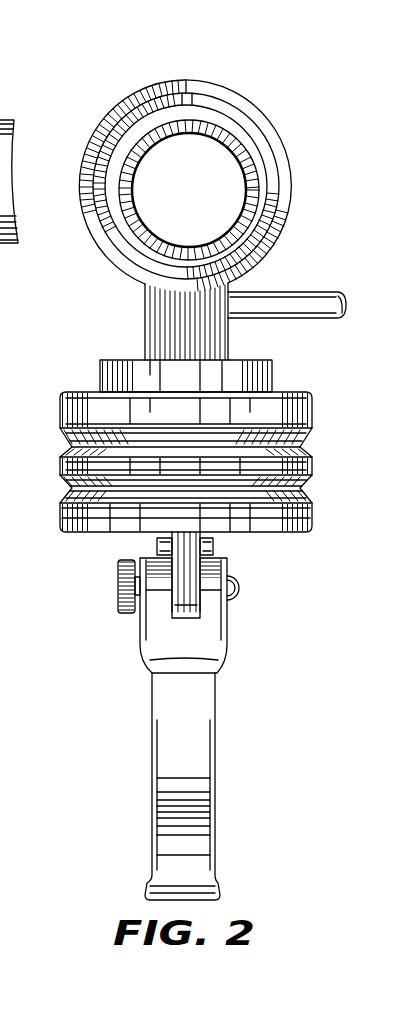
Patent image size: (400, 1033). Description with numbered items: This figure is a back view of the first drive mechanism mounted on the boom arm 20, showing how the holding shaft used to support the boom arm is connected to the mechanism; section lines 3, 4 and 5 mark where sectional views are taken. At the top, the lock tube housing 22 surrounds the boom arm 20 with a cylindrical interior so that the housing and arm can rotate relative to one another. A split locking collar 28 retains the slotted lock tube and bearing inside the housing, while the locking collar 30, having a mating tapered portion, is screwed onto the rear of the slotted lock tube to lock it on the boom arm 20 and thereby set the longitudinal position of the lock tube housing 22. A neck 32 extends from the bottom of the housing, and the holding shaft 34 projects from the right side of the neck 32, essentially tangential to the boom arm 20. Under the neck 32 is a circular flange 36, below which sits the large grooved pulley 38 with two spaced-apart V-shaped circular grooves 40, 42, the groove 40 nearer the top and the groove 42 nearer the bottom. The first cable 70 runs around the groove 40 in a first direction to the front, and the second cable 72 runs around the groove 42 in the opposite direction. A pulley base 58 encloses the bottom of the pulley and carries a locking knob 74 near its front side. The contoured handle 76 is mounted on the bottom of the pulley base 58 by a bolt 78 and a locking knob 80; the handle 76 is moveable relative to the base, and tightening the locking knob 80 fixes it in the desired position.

The section line 3- 3 is at (221, 72).
The section line 4- 4 is at (60, 447).
The section line 5- 5 is at (62, 488).
The boom arm 20 is at (132, 223).
The lock tube housing 22 is at (284, 152).
The split locking collar 28 is at (270, 229).
The locking collar 30 is at (125, 157).
The neck 32 is at (160, 314).
The holding shaft 34 is at (322, 318).
The circular flange 36 is at (100, 370).
The large grooved pulley 38 is at (312, 398).
The V-shaped circular groove 40 is at (312, 437).
The V-shaped circular groove 42 is at (204, 529).
The pulley base 58 is at (272, 522).
The first cable 70 is at (72, 447).
The second cable 72 is at (312, 481).
The locking knob 74 is at (157, 543).
The handle 76 is at (150, 890).
The bolt 78 is at (238, 586).
The locking knob 80 is at (118, 588).